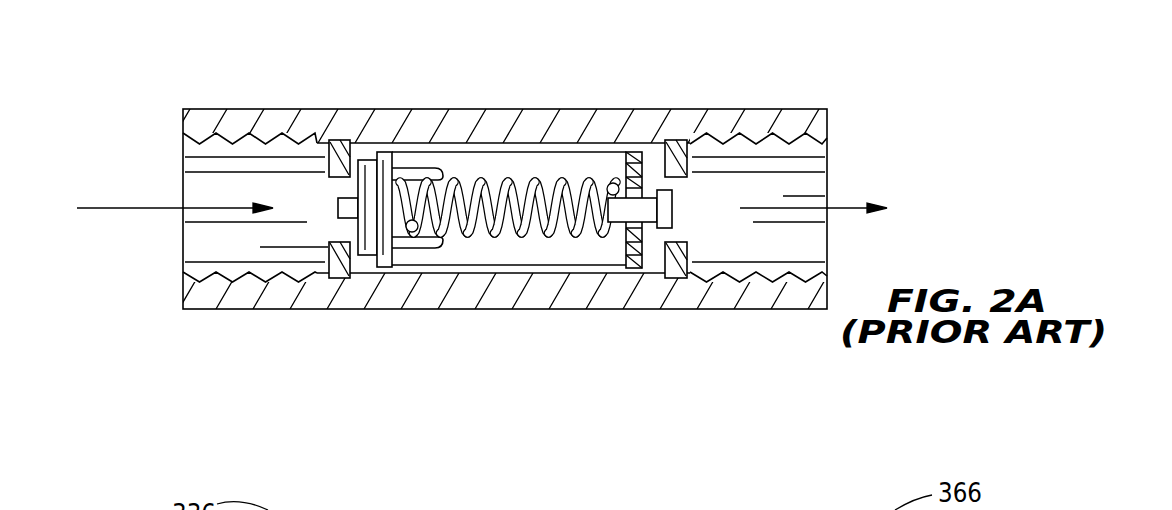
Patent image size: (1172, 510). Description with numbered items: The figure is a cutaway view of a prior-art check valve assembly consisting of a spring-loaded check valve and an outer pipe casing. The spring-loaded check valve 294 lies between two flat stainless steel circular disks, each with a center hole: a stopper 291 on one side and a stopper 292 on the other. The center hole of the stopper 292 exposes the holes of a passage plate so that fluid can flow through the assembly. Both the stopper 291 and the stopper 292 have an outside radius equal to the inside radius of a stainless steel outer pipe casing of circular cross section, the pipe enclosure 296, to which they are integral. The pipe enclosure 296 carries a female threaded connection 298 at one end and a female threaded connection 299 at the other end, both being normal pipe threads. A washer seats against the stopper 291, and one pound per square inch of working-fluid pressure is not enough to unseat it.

The stopper 291 is at (336, 140).
The stopper 292 is at (682, 140).
The spring-loaded check valve 294 is at (447, 255).
The pipe enclosure 296 is at (562, 113).
The female threaded connection 298 is at (242, 121).
The female threaded connection 299 is at (797, 125).